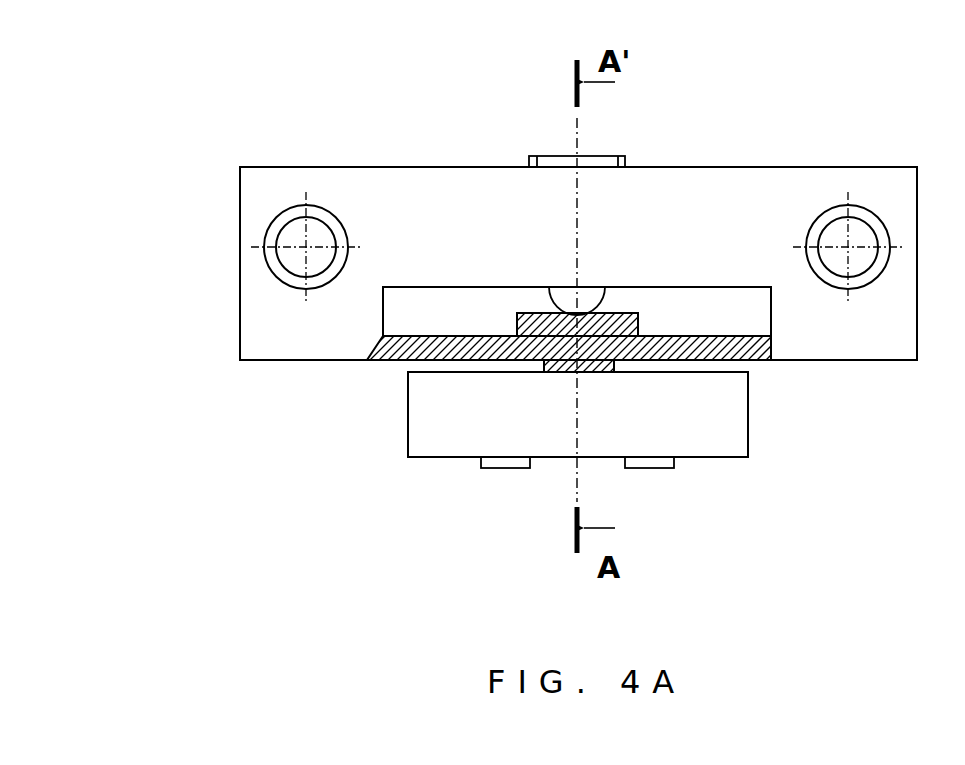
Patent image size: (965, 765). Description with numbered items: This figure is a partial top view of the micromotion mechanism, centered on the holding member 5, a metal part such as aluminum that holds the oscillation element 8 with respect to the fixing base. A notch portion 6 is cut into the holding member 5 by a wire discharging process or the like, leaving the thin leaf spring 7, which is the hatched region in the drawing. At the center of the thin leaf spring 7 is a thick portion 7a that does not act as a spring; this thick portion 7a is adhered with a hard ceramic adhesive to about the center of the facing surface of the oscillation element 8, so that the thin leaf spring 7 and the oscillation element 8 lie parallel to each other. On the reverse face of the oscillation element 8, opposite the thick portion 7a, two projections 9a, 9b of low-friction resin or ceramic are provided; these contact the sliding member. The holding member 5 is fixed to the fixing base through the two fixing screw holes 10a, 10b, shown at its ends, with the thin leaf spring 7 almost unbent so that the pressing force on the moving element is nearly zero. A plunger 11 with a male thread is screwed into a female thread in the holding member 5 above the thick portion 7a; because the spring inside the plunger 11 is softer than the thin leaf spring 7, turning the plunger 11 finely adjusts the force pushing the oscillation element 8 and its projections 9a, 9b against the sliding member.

The holding member 5 is at (370, 167).
The notch portion 6 is at (730, 295).
The thin leaf spring 7 is at (408, 345).
The thick portion 7a is at (607, 338).
The oscillation element 8 is at (748, 418).
The projection 9a is at (505, 468).
The projection 9b is at (653, 468).
The fixing screw hole 10a is at (300, 240).
The fixing screw hole 10b is at (840, 228).
The plunger 11 is at (555, 156).